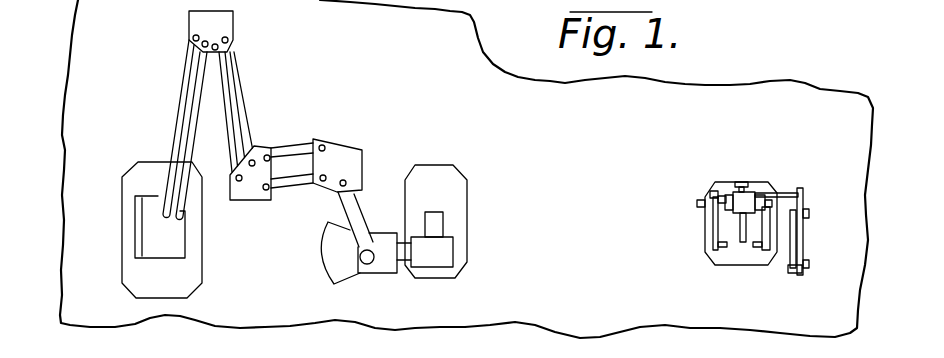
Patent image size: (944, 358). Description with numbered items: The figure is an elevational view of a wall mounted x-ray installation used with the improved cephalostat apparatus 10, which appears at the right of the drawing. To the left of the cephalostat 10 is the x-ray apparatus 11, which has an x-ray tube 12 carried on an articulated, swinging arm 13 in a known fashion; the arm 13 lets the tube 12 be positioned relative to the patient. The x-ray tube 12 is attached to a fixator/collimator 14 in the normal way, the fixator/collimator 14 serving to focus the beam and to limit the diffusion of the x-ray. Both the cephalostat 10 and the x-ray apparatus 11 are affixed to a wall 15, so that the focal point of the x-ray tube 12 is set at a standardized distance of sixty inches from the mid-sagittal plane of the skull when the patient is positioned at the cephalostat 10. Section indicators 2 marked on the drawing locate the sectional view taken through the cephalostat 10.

The cephalostat apparatus 10 is at (698, 267).
The x-ray apparatus 11 is at (317, 86).
The x-ray tube 12 is at (386, 274).
The articulated swinging arm 13 is at (330, 153).
The fixator/collimator 14 is at (453, 242).
The wall 15 is at (550, 146).
The section line 2- 2 is at (672, 178).